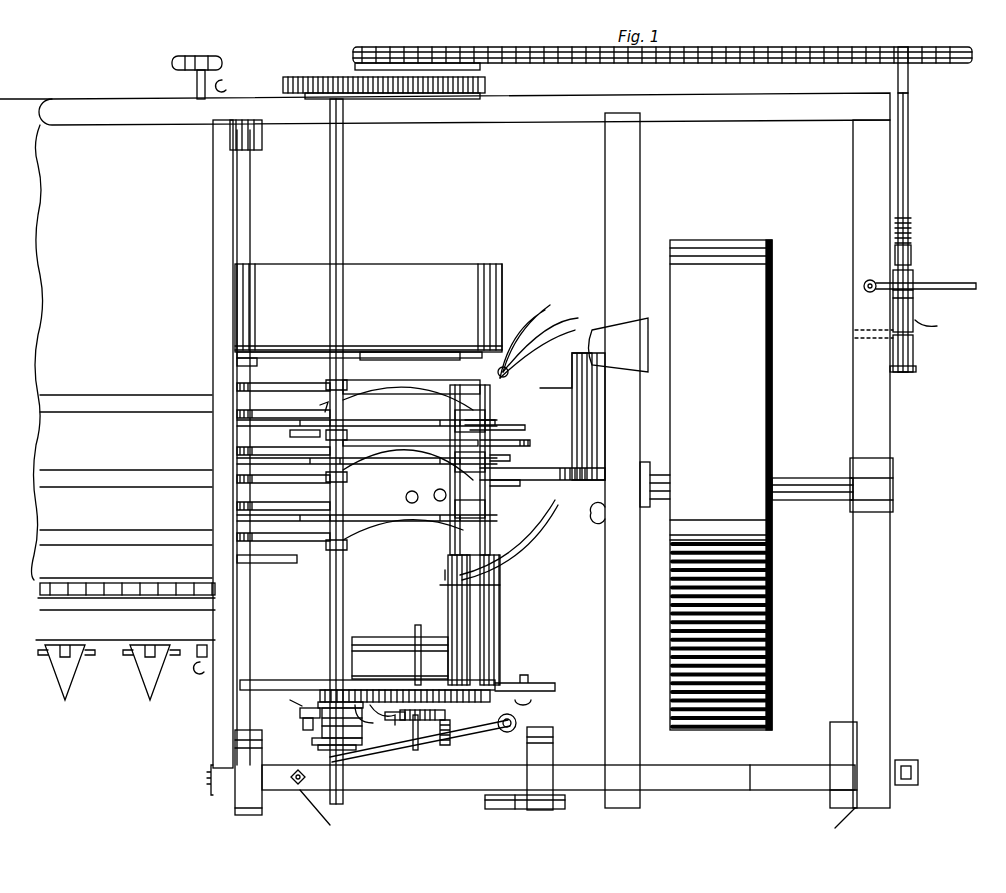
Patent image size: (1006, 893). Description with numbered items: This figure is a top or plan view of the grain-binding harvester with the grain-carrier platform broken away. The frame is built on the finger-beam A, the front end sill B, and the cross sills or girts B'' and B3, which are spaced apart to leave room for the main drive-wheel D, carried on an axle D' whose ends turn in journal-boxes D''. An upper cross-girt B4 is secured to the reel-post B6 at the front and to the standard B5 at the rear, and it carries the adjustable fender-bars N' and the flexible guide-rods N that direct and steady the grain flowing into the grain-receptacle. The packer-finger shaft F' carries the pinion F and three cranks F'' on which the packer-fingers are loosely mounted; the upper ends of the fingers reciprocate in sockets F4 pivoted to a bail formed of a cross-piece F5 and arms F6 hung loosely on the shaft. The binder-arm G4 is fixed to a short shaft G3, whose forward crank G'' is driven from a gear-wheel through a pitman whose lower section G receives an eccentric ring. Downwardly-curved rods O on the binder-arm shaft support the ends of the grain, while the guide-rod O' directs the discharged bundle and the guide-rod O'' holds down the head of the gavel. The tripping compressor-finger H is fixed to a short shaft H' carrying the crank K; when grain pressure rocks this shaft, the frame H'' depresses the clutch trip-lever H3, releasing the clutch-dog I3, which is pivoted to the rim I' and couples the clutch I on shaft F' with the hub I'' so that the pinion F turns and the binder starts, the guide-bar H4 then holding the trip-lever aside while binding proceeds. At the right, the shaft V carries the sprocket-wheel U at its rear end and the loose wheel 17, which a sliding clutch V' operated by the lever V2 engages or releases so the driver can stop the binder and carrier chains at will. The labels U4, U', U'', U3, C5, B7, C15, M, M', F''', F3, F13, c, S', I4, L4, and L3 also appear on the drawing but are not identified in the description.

The upper cross-girt B4 is at (445, 430).
The rack bar U4 is at (662, 44).
The rack plate U' is at (417, 49).
The sprocket-wheel U is at (917, 56).
The toothed gear segment U'' is at (384, 75).
The hand knob U3 is at (197, 65).
The stop C5 is at (227, 80).
The standard B5 is at (245, 467).
The cross sill or girt B3 is at (615, 460).
The cross sill or girt B'' is at (871, 464).
The front end sill B is at (558, 795).
The reel-post B6 is at (525, 768).
The foot block B7 is at (874, 775).
The main drive-wheel D is at (721, 485).
The axle D' is at (746, 480).
The journal-boxes D'' is at (871, 485).
The finger-beam A is at (124, 412).
The stop C15 is at (209, 662).
The frame box M is at (368, 320).
The frame bar M' is at (410, 363).
The guide-rods N is at (269, 467).
The pinion F is at (390, 530).
The binder-arm G4 is at (495, 365).
The packer-finger shaft F' is at (344, 456).
The fender-bars N' is at (283, 456).
The rods F''' is at (367, 470).
The cranks F'' is at (315, 445).
The springs F3 is at (408, 464).
The bar F13 is at (410, 450).
The pitman section G is at (299, 433).
The cross-piece F5 is at (448, 470).
The guides or sockets F4 is at (496, 451).
The tripping compressor-finger H is at (542, 416).
The downwardly-curved rods O is at (574, 348).
The guide-rod O'' is at (525, 341).
The downwardly-curved guide-rod O' is at (509, 533).
The spring end c is at (552, 530).
The short shaft H' is at (489, 569).
The short shaft G3 is at (426, 620).
The arms F6 is at (402, 573).
The rod S' is at (430, 628).
The clutch I is at (367, 718).
The rim I' is at (291, 696).
The clutch-dog I3 is at (306, 713).
The hub I'' is at (298, 728).
The link I4 is at (377, 711).
The crank or arm K is at (527, 679).
The frame or support H'' is at (434, 735).
The crank or arm G'' is at (378, 722).
The guide arm or bar H4 is at (418, 732).
The clutch trip-lever H3 is at (444, 742).
The link L4 is at (472, 737).
The link L3 is at (469, 757).
The shaft V is at (908, 232).
The lever V2 is at (920, 275).
The sliding clutch V' is at (898, 304).
The wheel 17 is at (938, 325).